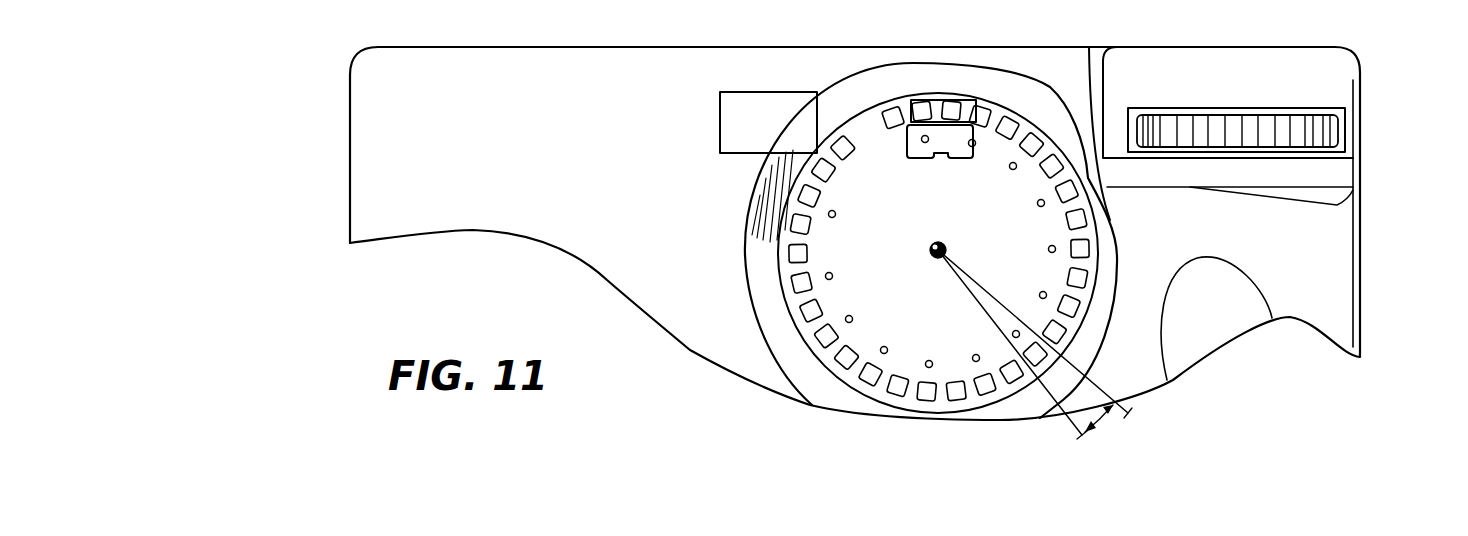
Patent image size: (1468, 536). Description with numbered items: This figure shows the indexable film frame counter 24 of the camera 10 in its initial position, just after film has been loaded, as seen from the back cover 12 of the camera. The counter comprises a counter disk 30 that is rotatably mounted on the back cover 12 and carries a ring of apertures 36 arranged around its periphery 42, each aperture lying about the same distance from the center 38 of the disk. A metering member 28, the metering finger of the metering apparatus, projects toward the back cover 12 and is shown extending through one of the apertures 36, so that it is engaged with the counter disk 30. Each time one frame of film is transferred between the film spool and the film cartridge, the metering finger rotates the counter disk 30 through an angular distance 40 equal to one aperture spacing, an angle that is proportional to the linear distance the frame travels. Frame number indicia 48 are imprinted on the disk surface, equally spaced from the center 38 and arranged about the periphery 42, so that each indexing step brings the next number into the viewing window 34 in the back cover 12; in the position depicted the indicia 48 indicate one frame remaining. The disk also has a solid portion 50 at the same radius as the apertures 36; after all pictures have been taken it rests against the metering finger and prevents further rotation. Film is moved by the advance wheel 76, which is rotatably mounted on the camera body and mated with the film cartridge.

The camera 10 is at (805, 233).
The back cover 12 is at (351, 156).
The indexable film frame counter 24 is at (1063, 112).
The metering member 28 is at (931, 100).
The counter disk 30 is at (1005, 232).
The viewing window 34 is at (970, 127).
The apertures 36 is at (820, 336).
The center of the counter disk 38 is at (930, 249).
The angular distance 40 is at (1100, 419).
The periphery of the counter disk 42 is at (817, 263).
The frame number indicia 48 is at (822, 192).
The solid portion 50 is at (873, 130).
The advance wheel 76 is at (1310, 131).